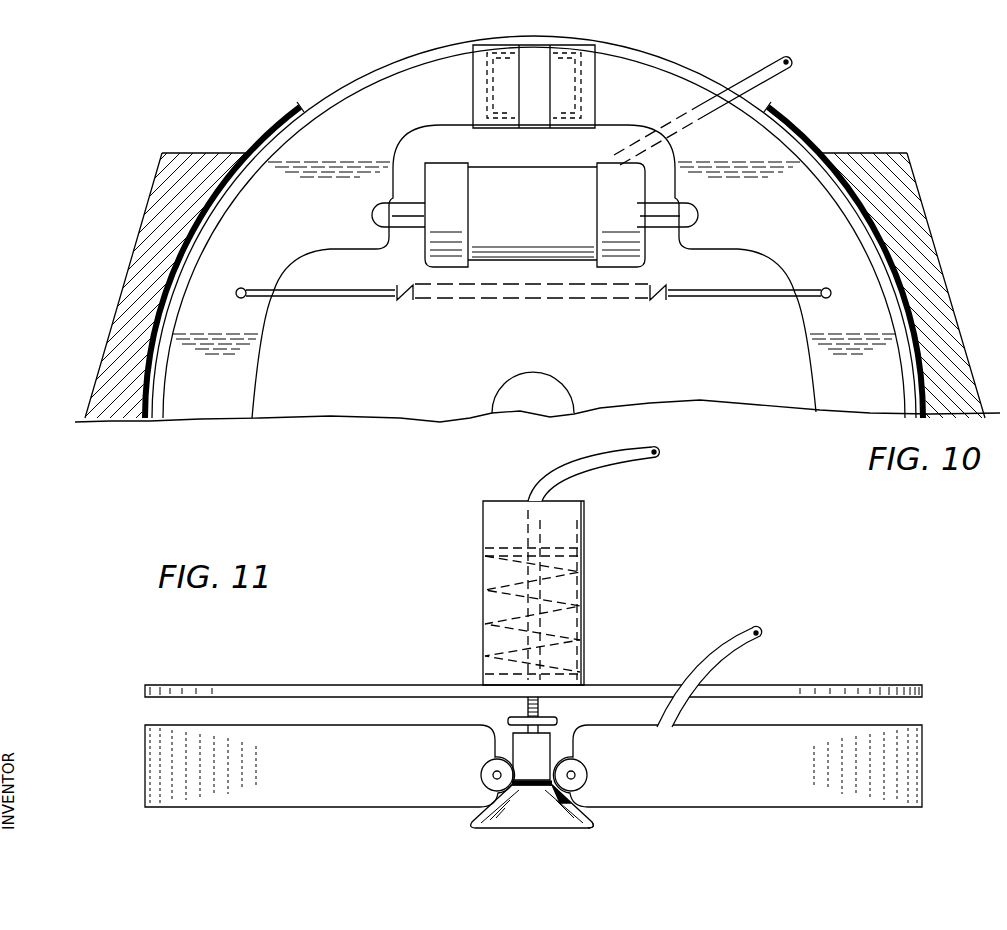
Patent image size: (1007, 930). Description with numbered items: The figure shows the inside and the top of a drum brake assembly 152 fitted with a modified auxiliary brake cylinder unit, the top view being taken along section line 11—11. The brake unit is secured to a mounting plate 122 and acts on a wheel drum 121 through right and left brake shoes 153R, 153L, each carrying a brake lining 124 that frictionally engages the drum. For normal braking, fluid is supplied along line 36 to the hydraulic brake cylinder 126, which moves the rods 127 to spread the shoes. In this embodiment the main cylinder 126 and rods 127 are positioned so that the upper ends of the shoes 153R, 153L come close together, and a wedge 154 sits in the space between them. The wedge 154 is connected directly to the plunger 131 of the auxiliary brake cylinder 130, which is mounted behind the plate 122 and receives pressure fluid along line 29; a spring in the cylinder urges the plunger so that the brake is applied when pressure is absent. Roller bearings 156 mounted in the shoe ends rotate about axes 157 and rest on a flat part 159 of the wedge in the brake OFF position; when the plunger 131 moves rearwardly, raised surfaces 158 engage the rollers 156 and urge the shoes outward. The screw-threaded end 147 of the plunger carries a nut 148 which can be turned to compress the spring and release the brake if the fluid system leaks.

In FIG. 10, the section line 11— 11 is at (873, 64).
In FIG. 10, the wheel drum 121 is at (136, 231).
In FIG. 10, the mounting plate 122 is at (411, 345).
In FIG. 11, the mounting plate 122 is at (830, 686).
In FIG. 10, the brake lining 124 is at (297, 115).
In FIG. 10, the hydraulic brake cylinder 126 is at (553, 222).
In FIG. 10, the rods 127 is at (378, 209).
In FIG. 10, the modified brake assembly 152 is at (796, 112).
In FIG. 10, the left brake shoe 153L is at (294, 246).
In FIG. 11, the left brake shoe 153L is at (311, 780).
In FIG. 10, the right brake shoe 153R is at (824, 246).
In FIG. 11, the right brake shoe 153R is at (759, 780).
In FIG. 10, the fluid line 36 is at (772, 83).
In FIG. 11, the fluid line 36 is at (718, 648).
In FIG. 11, the pressure fluid line 29 is at (624, 462).
In FIG. 11, the auxiliary brake cylinder 130 is at (586, 531).
In FIG. 11, the plunger 131 is at (583, 573).
In FIG. 11, the screw 147 is at (528, 708).
In FIG. 11, the nut 148 is at (507, 720).
In FIG. 11, the wedge 154 is at (483, 828).
In FIG. 11, the roller bearings 156 is at (578, 767).
In FIG. 11, the axes 157 is at (593, 782).
In FIG. 11, the raised surfaces 158 is at (590, 817).
In FIG. 11, the flat part 159 is at (550, 758).